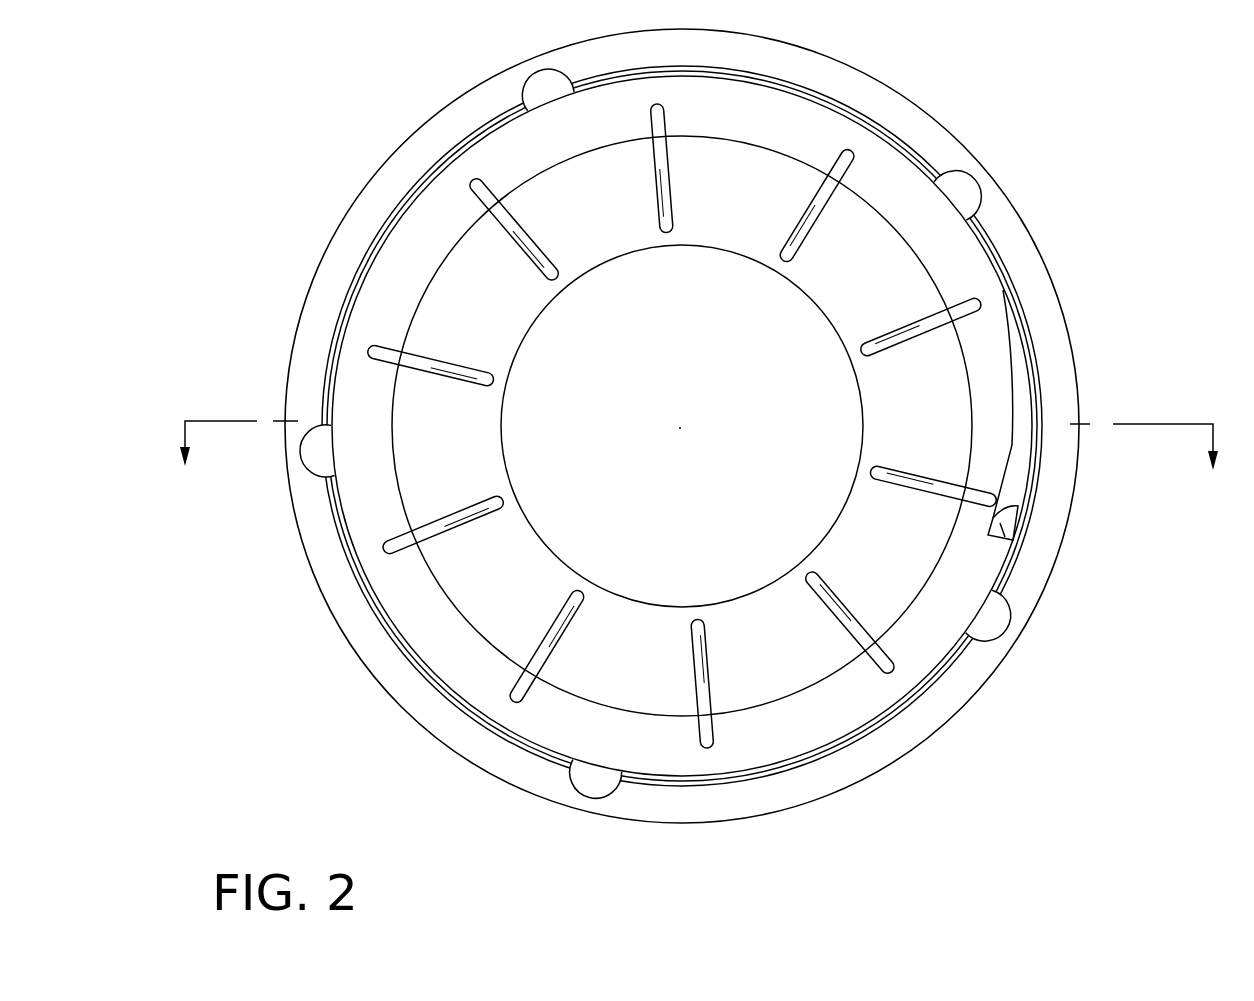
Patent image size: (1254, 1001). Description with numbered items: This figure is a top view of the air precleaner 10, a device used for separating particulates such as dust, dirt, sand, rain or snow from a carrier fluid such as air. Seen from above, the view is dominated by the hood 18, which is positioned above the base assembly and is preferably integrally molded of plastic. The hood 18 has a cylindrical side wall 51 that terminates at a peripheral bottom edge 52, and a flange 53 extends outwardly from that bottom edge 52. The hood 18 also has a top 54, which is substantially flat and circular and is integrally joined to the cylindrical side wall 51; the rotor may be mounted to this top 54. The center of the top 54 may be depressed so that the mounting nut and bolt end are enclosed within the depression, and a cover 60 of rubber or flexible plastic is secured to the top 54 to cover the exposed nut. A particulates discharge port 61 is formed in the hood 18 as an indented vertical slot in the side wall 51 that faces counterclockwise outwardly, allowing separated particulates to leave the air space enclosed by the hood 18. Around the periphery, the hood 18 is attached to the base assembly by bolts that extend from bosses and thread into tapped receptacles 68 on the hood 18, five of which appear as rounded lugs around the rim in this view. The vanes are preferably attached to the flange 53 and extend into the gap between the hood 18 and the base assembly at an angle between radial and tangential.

The air precleaner 10 is at (977, 732).
The hood 18 is at (427, 702).
The cylindrical side wall 51 is at (923, 130).
The peripheral bottom edge 52 is at (1003, 571).
The flange 53 is at (1040, 263).
The top 54 is at (438, 298).
The cover 60 is at (757, 575).
The particulates discharge port 61 is at (1007, 507).
The tapped receptacles 68 is at (533, 82).